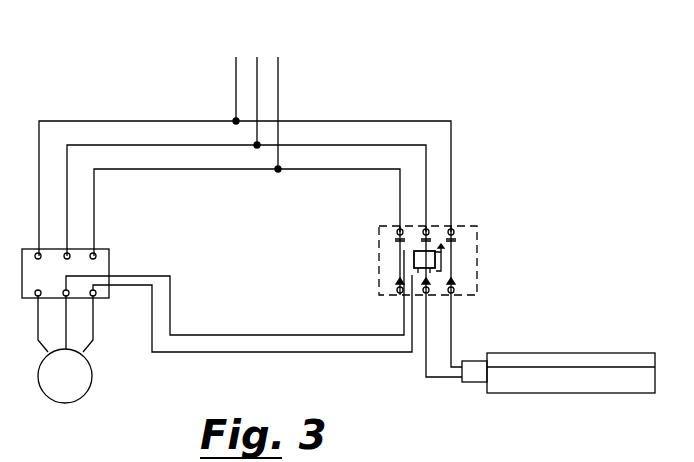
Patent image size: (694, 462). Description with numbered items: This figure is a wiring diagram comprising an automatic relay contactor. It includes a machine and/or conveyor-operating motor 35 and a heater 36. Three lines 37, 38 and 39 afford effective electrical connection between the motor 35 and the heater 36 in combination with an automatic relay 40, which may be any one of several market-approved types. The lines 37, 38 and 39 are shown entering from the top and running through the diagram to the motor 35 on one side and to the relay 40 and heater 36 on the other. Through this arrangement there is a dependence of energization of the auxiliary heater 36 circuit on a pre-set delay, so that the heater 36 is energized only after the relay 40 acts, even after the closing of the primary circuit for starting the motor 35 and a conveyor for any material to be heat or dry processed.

The motor 35 is at (65, 403).
The heater 36 is at (583, 393).
The line 37 is at (279, 79).
The line 38 is at (258, 42).
The line 39 is at (235, 77).
The automatic relay 40 is at (443, 258).